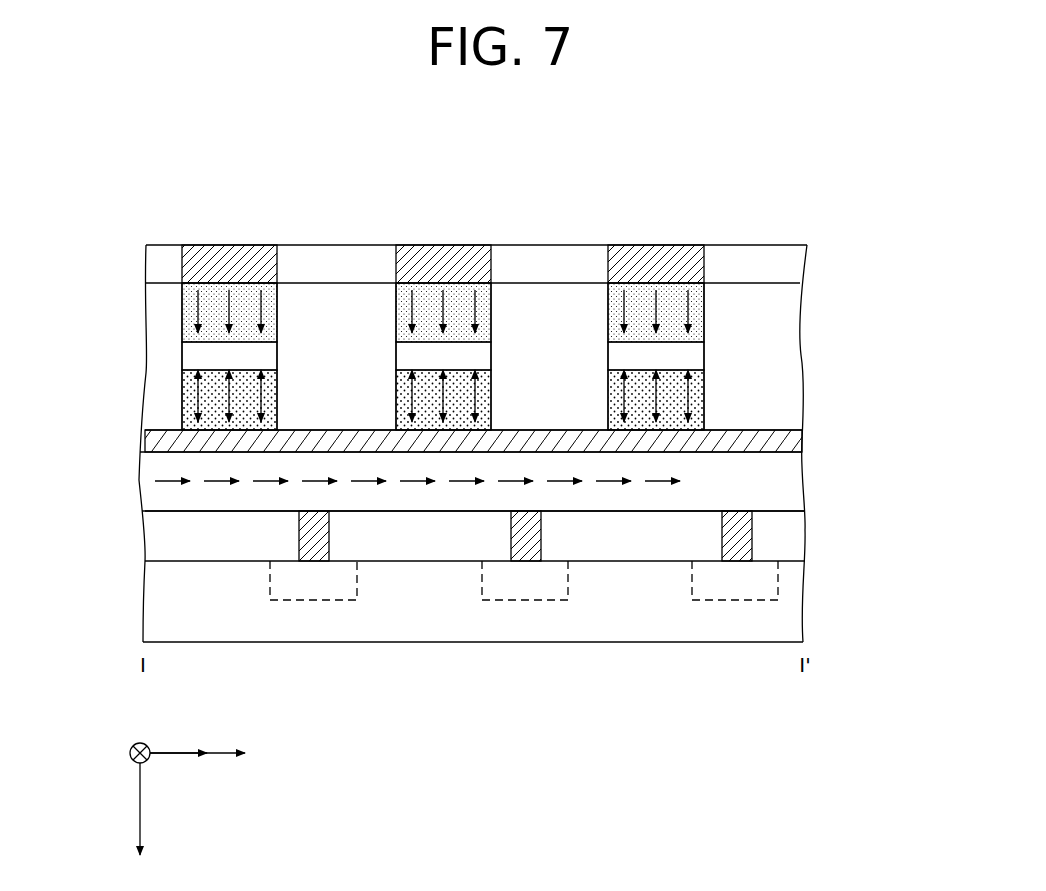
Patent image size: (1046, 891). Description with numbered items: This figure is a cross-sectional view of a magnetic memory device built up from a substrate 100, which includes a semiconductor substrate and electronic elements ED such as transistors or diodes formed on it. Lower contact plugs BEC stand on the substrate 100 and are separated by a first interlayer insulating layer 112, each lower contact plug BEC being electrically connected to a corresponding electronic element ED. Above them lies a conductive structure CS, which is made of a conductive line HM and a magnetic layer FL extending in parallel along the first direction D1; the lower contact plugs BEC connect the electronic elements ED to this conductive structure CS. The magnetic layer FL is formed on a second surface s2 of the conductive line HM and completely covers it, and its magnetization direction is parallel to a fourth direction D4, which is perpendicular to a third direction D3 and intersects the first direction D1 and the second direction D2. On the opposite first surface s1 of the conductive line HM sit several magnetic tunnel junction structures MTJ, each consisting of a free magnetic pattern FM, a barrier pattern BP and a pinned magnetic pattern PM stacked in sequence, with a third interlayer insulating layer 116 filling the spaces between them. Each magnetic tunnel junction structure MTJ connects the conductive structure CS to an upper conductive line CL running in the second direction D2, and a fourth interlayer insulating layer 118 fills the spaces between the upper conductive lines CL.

The substrate 100 is at (152, 608).
The first interlayer insulating layer 112 is at (157, 538).
The third interlayer insulating layer 116 is at (150, 322).
The fourth interlayer insulating layer 118 is at (152, 262).
The first surface of the conductive line s1 is at (157, 430).
The second surface of the conductive line s2 is at (158, 452).
The upper conductive line CL is at (697, 268).
The pinned magnetic pattern PM is at (697, 308).
The barrier pattern BP is at (697, 355).
The free magnetic pattern FM is at (697, 397).
The magnetic tunnel junction structure MTJ is at (566, 356).
The conductive line HM is at (797, 442).
The magnetic layer FL is at (793, 481).
The conductive structure CS is at (542, 470).
The lower contact plug BEC is at (745, 535).
The electronic element ED is at (778, 590).
The first direction D1 is at (213, 753).
The second direction D2 is at (141, 740).
The third direction D3 is at (141, 823).
The fourth direction D4 is at (185, 738).